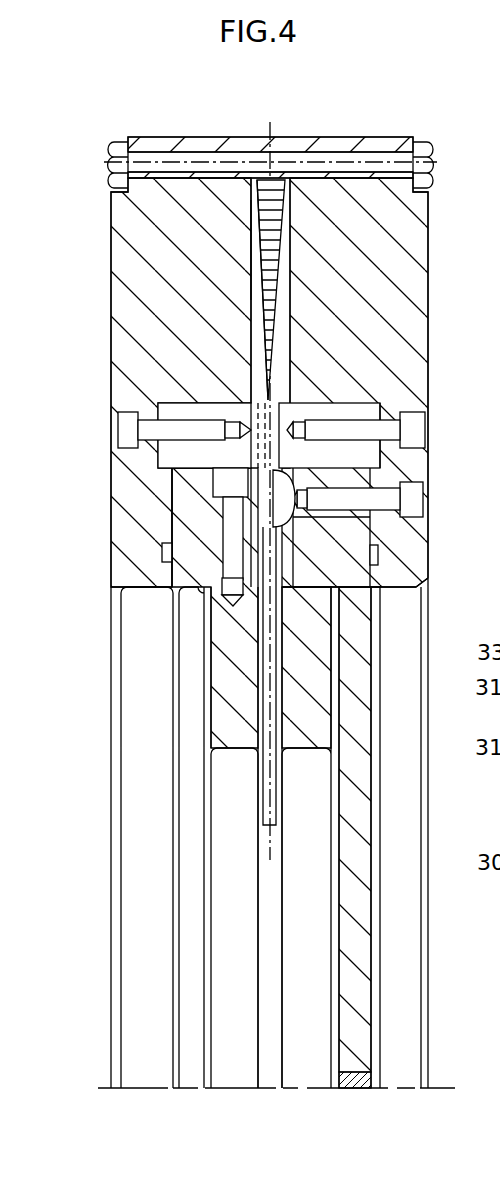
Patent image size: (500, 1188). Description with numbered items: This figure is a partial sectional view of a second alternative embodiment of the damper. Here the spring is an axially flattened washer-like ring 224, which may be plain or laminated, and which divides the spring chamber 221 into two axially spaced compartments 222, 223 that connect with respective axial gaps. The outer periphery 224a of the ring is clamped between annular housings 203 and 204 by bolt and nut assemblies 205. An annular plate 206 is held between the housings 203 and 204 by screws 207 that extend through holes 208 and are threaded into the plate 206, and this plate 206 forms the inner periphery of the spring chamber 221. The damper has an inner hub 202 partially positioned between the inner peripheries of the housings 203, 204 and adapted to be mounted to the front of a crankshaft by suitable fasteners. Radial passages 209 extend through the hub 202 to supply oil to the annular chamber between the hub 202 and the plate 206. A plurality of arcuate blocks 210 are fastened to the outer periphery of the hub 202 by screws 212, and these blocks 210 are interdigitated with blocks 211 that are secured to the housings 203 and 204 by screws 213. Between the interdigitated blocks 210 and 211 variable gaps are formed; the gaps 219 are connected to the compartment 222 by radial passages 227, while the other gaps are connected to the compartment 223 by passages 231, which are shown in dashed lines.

The inner hub 202 is at (225, 646).
The annular housing 203 is at (148, 233).
The annular housing 204 is at (377, 230).
The bolt and nut assembly 205 is at (187, 158).
The annular plate 206 is at (162, 450).
The screw 207 is at (385, 412).
The hole 208 is at (140, 422).
The radial passage 209 is at (280, 603).
The arcuate block 210 is at (203, 503).
The block 211 is at (383, 482).
The screw 212 is at (228, 562).
The screw 213 is at (300, 508).
The variable gap 219 is at (352, 530).
The spring chamber 221 is at (255, 345).
The compartment 222 is at (300, 292).
The compartment 223 is at (257, 300).
The axially flattened washer-like ring 224 is at (425, 200).
The outer periphery 224a is at (275, 152).
The radial passage 227 is at (403, 378).
The passage 231 is at (265, 425).